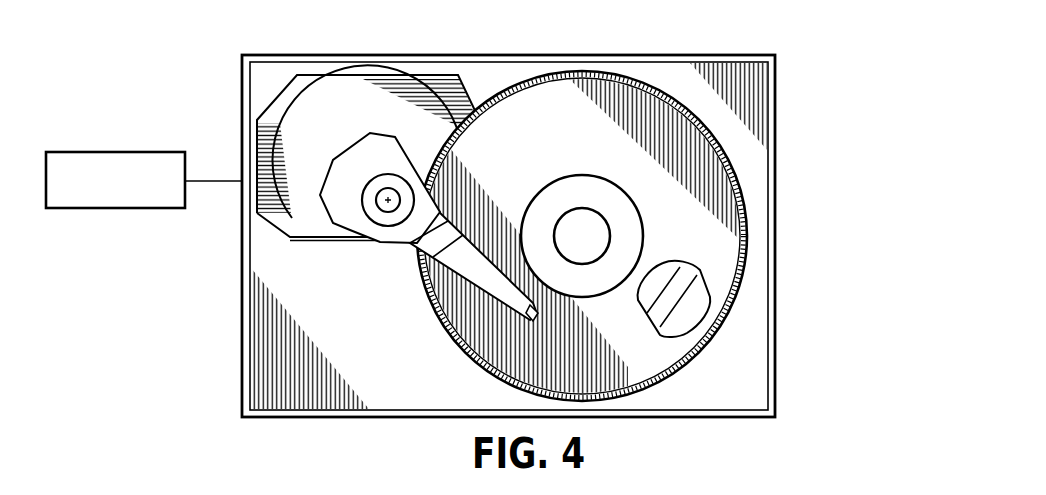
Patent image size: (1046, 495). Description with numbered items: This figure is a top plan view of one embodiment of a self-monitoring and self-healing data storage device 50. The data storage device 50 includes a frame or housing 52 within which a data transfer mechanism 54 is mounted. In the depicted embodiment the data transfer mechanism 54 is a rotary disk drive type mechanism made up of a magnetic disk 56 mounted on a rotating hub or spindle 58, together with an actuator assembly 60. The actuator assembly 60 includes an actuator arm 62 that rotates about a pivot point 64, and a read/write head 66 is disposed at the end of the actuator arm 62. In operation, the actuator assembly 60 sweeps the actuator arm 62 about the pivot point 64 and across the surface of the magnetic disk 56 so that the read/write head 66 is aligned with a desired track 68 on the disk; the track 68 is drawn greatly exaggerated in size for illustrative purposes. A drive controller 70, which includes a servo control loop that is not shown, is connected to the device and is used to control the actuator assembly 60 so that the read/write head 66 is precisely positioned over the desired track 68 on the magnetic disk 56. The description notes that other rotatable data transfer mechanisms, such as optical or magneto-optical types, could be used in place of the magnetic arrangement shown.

The data storage device 50 is at (791, 81).
The housing 52 is at (775, 128).
The data transfer mechanism 54 is at (750, 210).
The magnetic disk 56 is at (532, 151).
The hub 58 is at (567, 228).
The actuator assembly 60 is at (299, 148).
The actuator arm 62 is at (467, 267).
The pivot point 64 is at (382, 208).
The read/write head 66 is at (538, 322).
The track 68 is at (663, 263).
The drive controller 70 is at (110, 209).